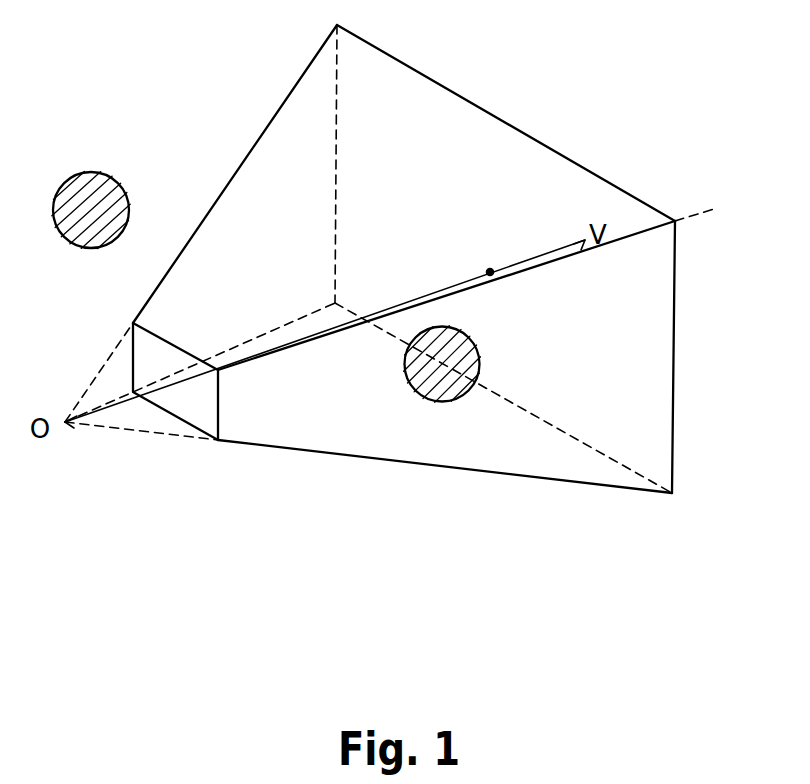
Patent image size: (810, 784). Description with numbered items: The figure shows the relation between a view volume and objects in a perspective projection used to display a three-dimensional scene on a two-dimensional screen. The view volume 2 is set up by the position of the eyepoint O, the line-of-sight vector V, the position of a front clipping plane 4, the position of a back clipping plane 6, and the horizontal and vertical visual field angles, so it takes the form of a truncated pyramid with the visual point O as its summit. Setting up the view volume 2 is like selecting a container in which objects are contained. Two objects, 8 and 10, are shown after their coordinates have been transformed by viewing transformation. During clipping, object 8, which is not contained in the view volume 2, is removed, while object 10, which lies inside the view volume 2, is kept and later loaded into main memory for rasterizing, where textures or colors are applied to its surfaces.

The view volume 2 is at (512, 143).
The front clipping plane 4 is at (218, 421).
The back clipping plane 6 is at (675, 352).
The object 8 is at (115, 177).
The object 10 is at (480, 350).